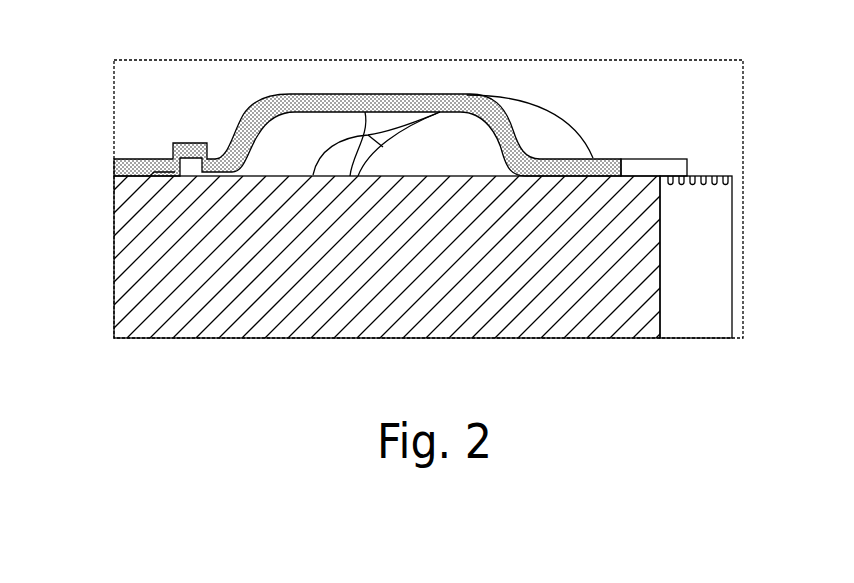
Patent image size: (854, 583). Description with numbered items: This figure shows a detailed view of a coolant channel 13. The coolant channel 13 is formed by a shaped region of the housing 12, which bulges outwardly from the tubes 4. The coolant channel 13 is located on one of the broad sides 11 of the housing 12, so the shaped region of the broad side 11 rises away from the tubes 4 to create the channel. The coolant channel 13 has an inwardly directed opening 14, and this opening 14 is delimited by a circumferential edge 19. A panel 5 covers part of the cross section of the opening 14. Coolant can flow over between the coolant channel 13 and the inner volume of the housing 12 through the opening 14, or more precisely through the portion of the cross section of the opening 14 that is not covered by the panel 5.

The tubes 4 is at (437, 317).
The panel 5 is at (157, 177).
The broad side 11 is at (128, 157).
The housing 12 is at (549, 133).
The coolant channel 13 is at (418, 133).
The opening 14 is at (372, 184).
The circumferential edge 19 is at (502, 162).